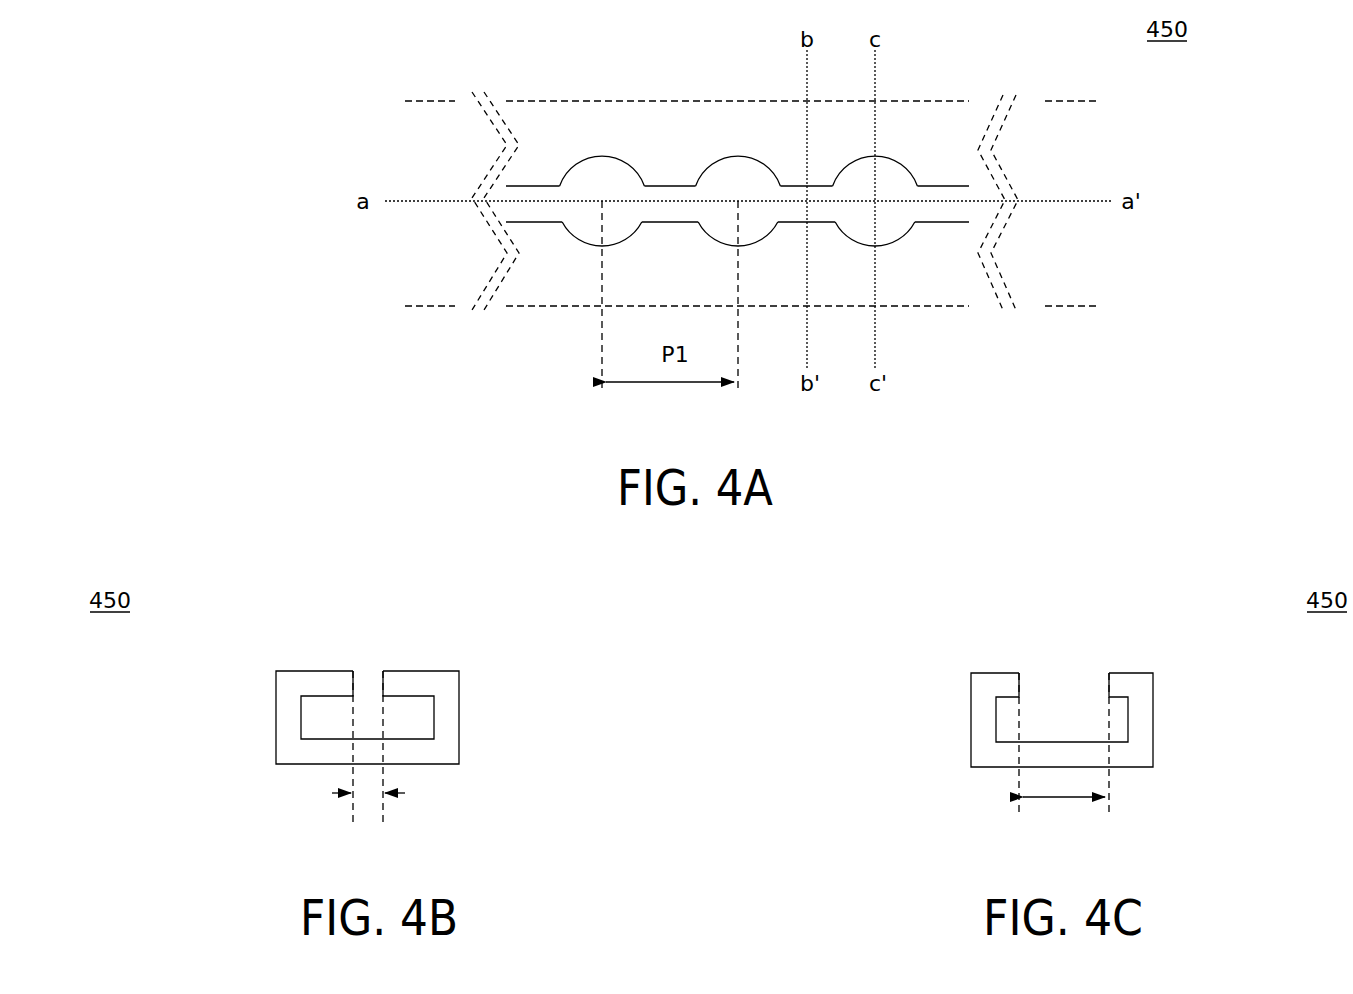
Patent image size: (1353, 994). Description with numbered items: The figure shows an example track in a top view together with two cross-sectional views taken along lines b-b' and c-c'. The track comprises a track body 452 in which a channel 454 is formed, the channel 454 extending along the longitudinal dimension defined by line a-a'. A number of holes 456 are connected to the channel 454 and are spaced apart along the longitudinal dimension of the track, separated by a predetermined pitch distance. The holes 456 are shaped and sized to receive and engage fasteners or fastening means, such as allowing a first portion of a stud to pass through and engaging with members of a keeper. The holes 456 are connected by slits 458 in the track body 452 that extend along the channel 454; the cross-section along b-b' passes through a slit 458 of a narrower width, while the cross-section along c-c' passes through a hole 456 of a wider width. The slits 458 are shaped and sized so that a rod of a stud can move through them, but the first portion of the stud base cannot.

In FIG. 4A, the track body 452 is at (900, 291).
In FIG. 4B, the track body 452 is at (448, 687).
In FIG. 4C, the track body 452 is at (1140, 687).
In FIG. 4A, the channel 454 is at (532, 200).
In FIG. 4B, the channel 454 is at (331, 716).
In FIG. 4C, the channel 454 is at (1048, 722).
In FIG. 4A, the holes 456 is at (597, 151).
In FIG. 4C, the holes 456 is at (1069, 672).
In FIG. 4A, the slits 458 is at (673, 184).
In FIG. 4B, the slits 458 is at (359, 657).